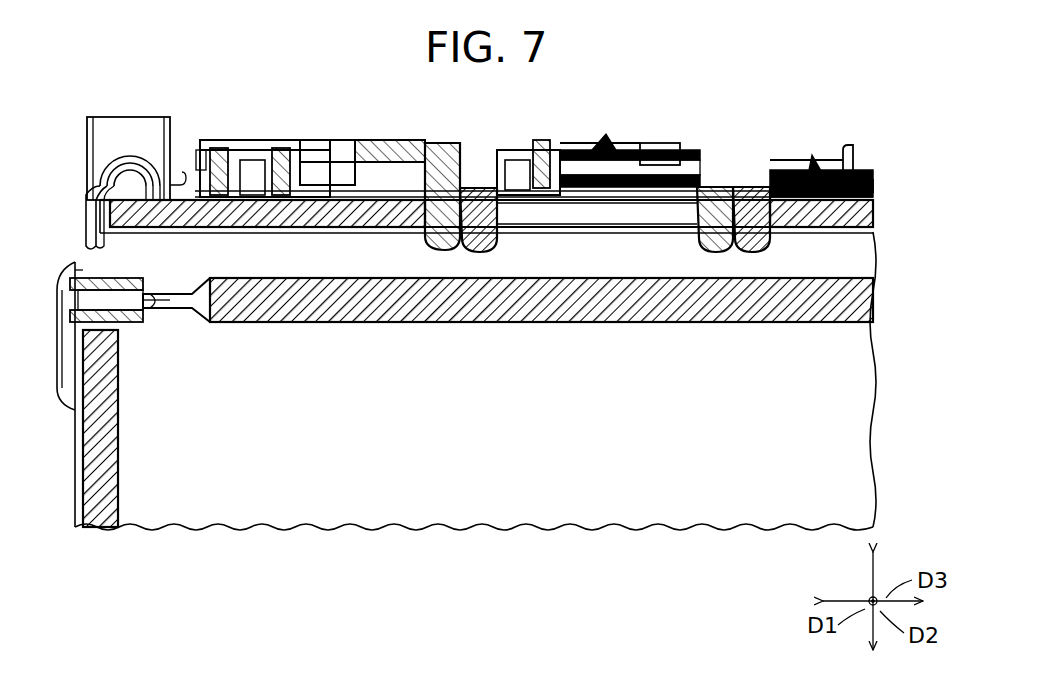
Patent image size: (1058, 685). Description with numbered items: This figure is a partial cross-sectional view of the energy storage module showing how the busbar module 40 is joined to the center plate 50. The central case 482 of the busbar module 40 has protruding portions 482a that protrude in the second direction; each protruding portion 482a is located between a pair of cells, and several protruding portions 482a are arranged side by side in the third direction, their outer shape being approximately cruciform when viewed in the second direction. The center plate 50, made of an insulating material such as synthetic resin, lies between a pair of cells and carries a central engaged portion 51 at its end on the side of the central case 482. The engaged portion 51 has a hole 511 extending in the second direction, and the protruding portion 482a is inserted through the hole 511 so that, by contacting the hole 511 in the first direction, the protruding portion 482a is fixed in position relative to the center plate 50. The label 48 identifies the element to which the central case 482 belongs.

The busbar module 40 is at (479, 152).
The terminal member 48 is at (479, 164).
The central case 482 is at (571, 190).
The protruding portion 482a is at (483, 175).
The center plate 50 is at (850, 306).
The central engaged portion 51 is at (486, 170).
The hole 511 is at (633, 215).